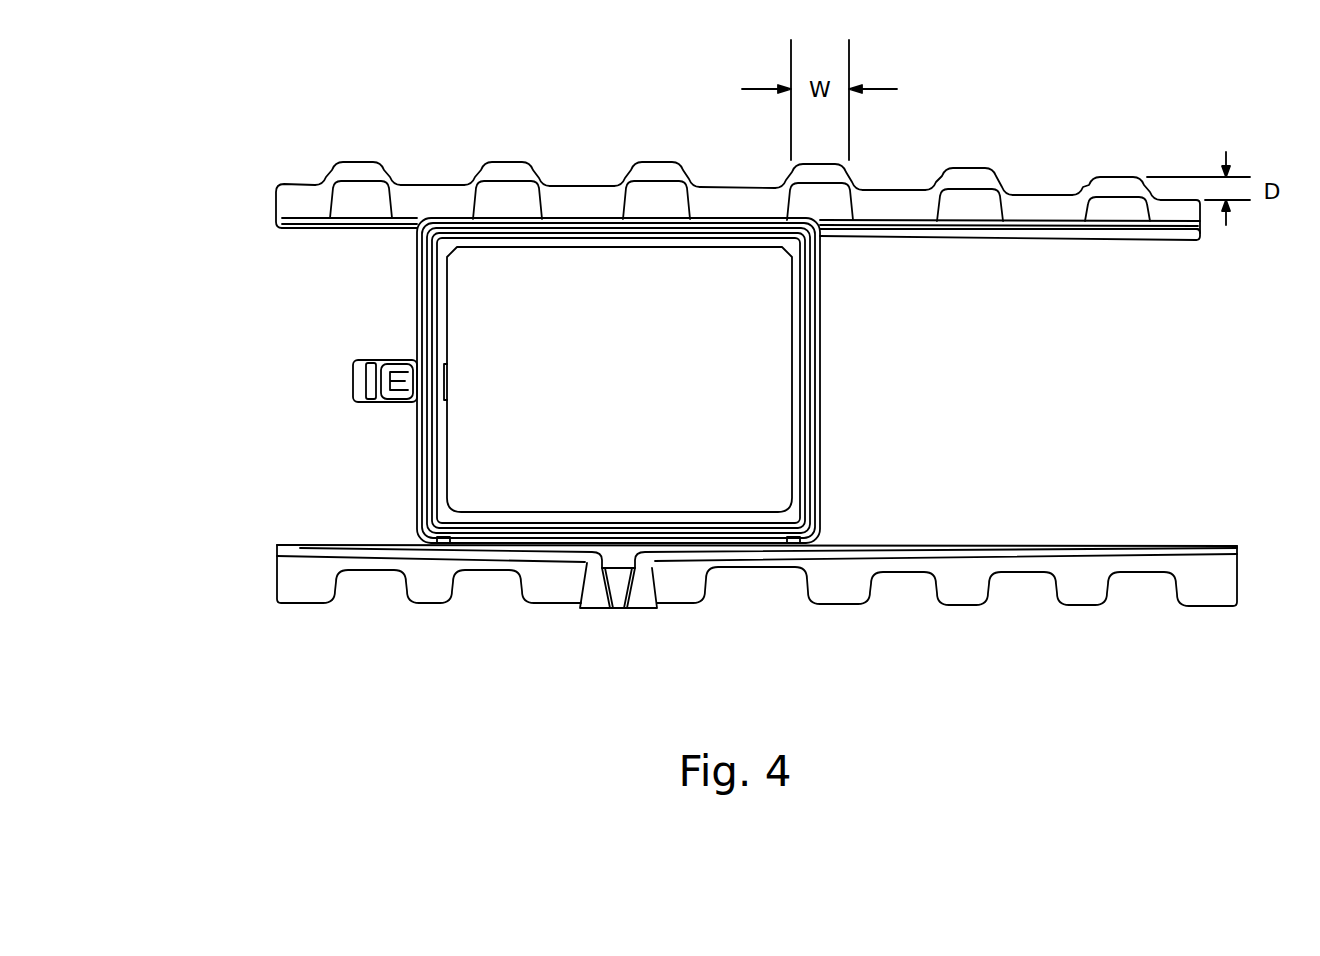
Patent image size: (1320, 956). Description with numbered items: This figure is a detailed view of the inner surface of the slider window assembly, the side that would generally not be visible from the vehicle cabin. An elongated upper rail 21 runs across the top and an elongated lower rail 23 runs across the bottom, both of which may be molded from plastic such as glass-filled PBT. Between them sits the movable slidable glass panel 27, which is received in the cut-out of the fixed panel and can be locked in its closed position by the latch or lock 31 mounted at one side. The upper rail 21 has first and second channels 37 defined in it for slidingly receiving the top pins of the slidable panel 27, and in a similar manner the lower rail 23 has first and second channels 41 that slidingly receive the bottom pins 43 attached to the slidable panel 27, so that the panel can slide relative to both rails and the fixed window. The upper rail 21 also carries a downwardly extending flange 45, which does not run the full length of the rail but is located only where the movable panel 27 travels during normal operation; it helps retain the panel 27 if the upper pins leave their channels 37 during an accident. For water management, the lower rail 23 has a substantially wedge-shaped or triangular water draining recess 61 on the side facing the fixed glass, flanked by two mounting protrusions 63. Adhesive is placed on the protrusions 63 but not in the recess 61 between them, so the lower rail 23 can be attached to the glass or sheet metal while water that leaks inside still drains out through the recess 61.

The upper rail 21 is at (1002, 232).
The lower rail 23 is at (929, 544).
The slidable glass panel 27 is at (612, 400).
The latch/lock 31 is at (367, 362).
The channels 37 is at (935, 223).
The channels 41 is at (312, 543).
The bottom pins 43 is at (438, 540).
The flange 45 is at (1115, 234).
The water draining recess 61 is at (621, 608).
The mounting protrusions 63 is at (597, 606).